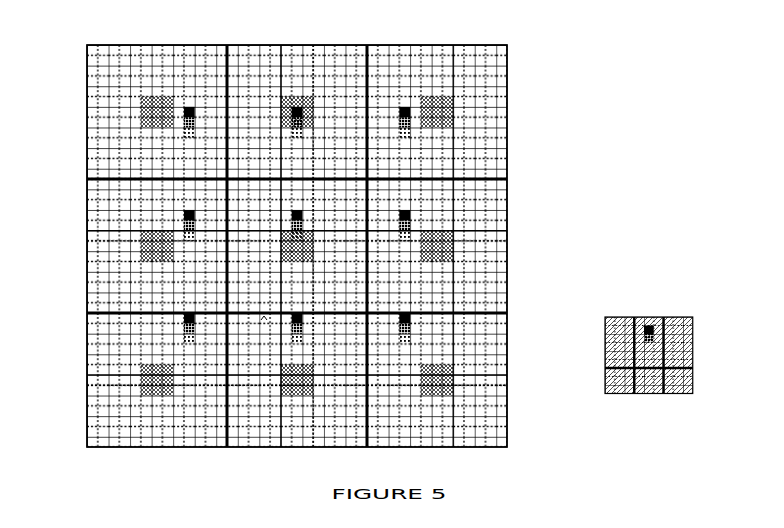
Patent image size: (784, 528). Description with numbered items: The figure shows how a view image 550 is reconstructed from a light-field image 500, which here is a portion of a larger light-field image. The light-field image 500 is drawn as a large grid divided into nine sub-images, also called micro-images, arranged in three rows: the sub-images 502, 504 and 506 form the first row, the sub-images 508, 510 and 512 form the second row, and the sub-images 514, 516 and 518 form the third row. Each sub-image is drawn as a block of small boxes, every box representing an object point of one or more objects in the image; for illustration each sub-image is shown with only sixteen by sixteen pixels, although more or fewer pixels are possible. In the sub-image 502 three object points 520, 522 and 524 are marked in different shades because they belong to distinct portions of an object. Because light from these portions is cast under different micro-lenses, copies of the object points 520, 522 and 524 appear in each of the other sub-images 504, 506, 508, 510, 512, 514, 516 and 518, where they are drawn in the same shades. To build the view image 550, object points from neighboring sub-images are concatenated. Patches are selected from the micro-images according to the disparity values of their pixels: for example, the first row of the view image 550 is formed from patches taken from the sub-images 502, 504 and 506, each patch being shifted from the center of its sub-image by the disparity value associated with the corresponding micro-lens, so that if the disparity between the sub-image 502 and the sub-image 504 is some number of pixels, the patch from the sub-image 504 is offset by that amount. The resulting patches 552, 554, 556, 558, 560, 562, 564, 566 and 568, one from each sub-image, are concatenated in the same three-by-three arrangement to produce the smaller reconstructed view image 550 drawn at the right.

The light-field image 500 is at (548, 27).
The sub-image 502 is at (85, 60).
The sub-image 504 is at (280, 42).
The sub-image 506 is at (456, 42).
The sub-image 508 is at (84, 243).
The sub-image 510 is at (264, 320).
The sub-image 512 is at (509, 233).
The sub-image 514 is at (84, 383).
The sub-image 516 is at (317, 450).
The sub-image 518 is at (509, 380).
The object point 520 is at (192, 106).
The object point 522 is at (187, 128).
The object point 524 is at (188, 143).
The view image 550 is at (704, 272).
The patch 552 is at (620, 316).
The patch 554 is at (647, 317).
The patch 556 is at (680, 316).
The patch 558 is at (605, 347).
The patch 560 is at (642, 372).
The patch 562 is at (693, 347).
The patch 564 is at (605, 375).
The patch 566 is at (650, 393).
The patch 568 is at (693, 375).